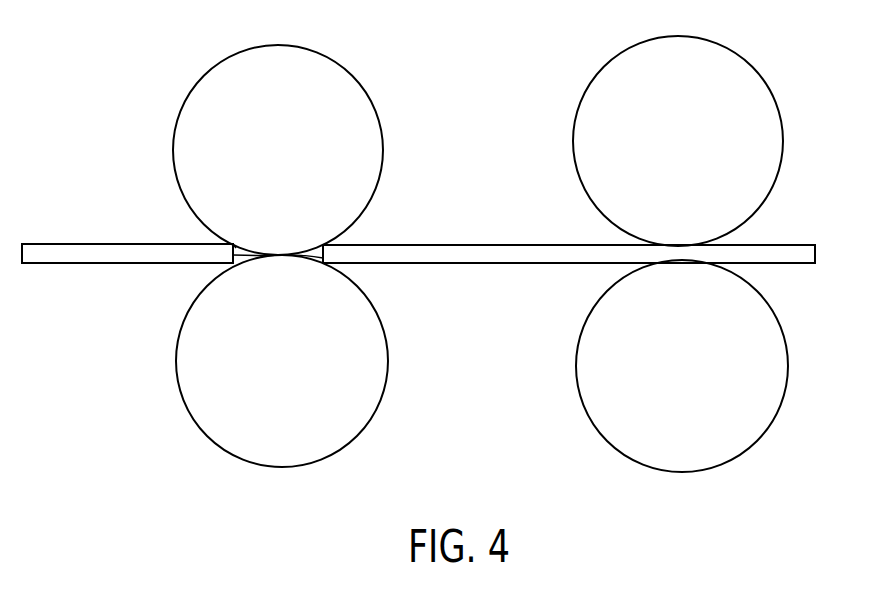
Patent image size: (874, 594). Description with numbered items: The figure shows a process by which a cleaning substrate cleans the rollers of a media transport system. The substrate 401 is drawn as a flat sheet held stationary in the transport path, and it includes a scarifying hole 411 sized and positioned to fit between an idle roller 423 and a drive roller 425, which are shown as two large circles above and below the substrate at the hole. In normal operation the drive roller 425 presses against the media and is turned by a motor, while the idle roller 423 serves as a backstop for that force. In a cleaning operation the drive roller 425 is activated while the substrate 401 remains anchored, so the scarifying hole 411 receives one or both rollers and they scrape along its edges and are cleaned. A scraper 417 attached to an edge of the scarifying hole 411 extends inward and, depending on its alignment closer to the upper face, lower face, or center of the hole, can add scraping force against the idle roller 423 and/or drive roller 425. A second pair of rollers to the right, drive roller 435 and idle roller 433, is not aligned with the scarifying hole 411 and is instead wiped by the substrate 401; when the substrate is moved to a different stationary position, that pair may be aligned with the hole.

The substrate 401 is at (53, 250).
The scarifying hole 411 is at (236, 248).
The scraper 417 is at (305, 253).
The idle roller 423 is at (375, 146).
The drive roller 425 is at (372, 386).
The idle roller 433 is at (772, 130).
The drive roller 435 is at (774, 377).